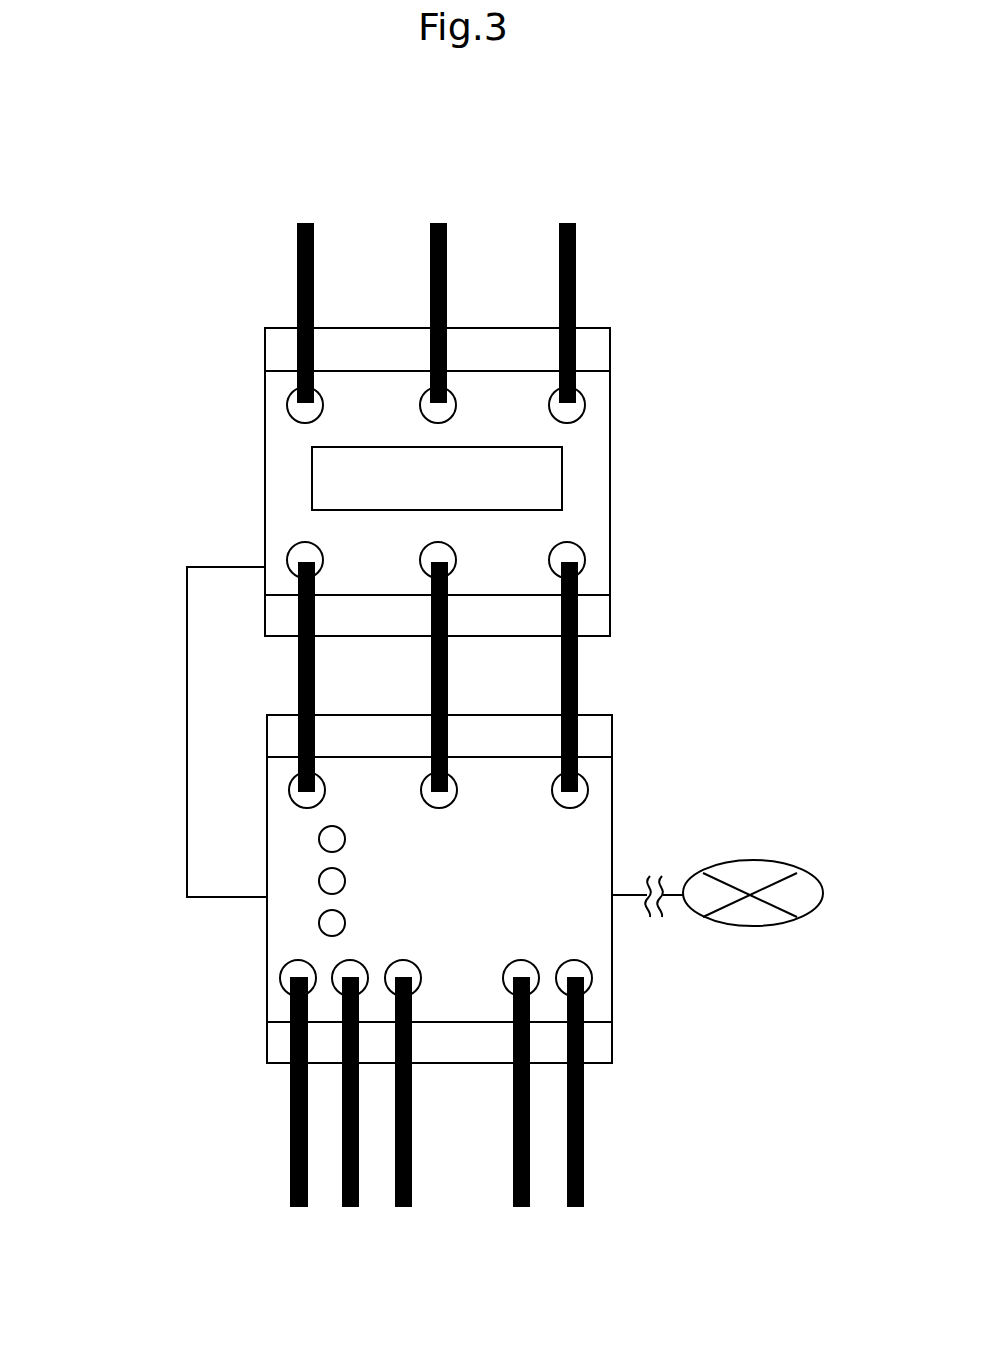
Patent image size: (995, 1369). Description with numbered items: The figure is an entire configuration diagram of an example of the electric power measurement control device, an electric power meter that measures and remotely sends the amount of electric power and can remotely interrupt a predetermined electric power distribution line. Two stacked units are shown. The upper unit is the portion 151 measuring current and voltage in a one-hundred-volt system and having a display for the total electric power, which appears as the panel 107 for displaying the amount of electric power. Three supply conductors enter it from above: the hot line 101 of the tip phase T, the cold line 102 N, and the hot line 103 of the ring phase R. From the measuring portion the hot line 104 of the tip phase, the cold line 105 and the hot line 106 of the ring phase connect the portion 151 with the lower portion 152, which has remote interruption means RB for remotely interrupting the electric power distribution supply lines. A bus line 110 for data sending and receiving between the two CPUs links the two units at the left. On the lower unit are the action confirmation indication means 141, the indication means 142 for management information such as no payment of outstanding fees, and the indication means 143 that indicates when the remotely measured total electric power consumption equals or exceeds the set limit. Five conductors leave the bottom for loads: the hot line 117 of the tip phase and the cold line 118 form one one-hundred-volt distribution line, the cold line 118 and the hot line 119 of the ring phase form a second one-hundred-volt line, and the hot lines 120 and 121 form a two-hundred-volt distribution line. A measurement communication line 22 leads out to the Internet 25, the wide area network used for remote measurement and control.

The measurement communication line 22 is at (647, 872).
The Internet (wide area network) 25 is at (753, 878).
The hot line (tip phase: T) from the electric power supply side 101 is at (272, 296).
The cold line from the electric power supply side: N 102 is at (403, 296).
The hot line (ring phase: R) from the electric power supply side 103 is at (534, 296).
The hot line (tip phase) connecting 151 with 152 104 is at (338, 677).
The cold line connecting 151 with 152 105 is at (472, 677).
The hot line (ring phase) connecting 151 with 152 106 is at (602, 677).
The panel for displaying the amount of electric power 107 is at (525, 431).
The bus line for data sending-receiving between CPU-1 and CPU-2 110 is at (157, 740).
The hot line (tip phase) for connecting with a load 117 is at (248, 1128).
The cold line for connecting with a load 118 is at (324, 1143).
The hot line (ring phase) for connecting with a load 119 is at (416, 1128).
The hot line (tip phase) for connecting with a load 120 is at (593, 1141).
The hot line (ring phase) for connecting with a load 121 is at (620, 1104).
The action confirmation indication means 141 is at (368, 832).
The indication means for management information 142 is at (368, 874).
The indication means for consumption exceeding limit 143 is at (368, 916).
The portion measuring current and voltage in a 100 V system and having a display for 151 is at (500, 448).
The portion having remote interruption means RB 152 is at (498, 895).